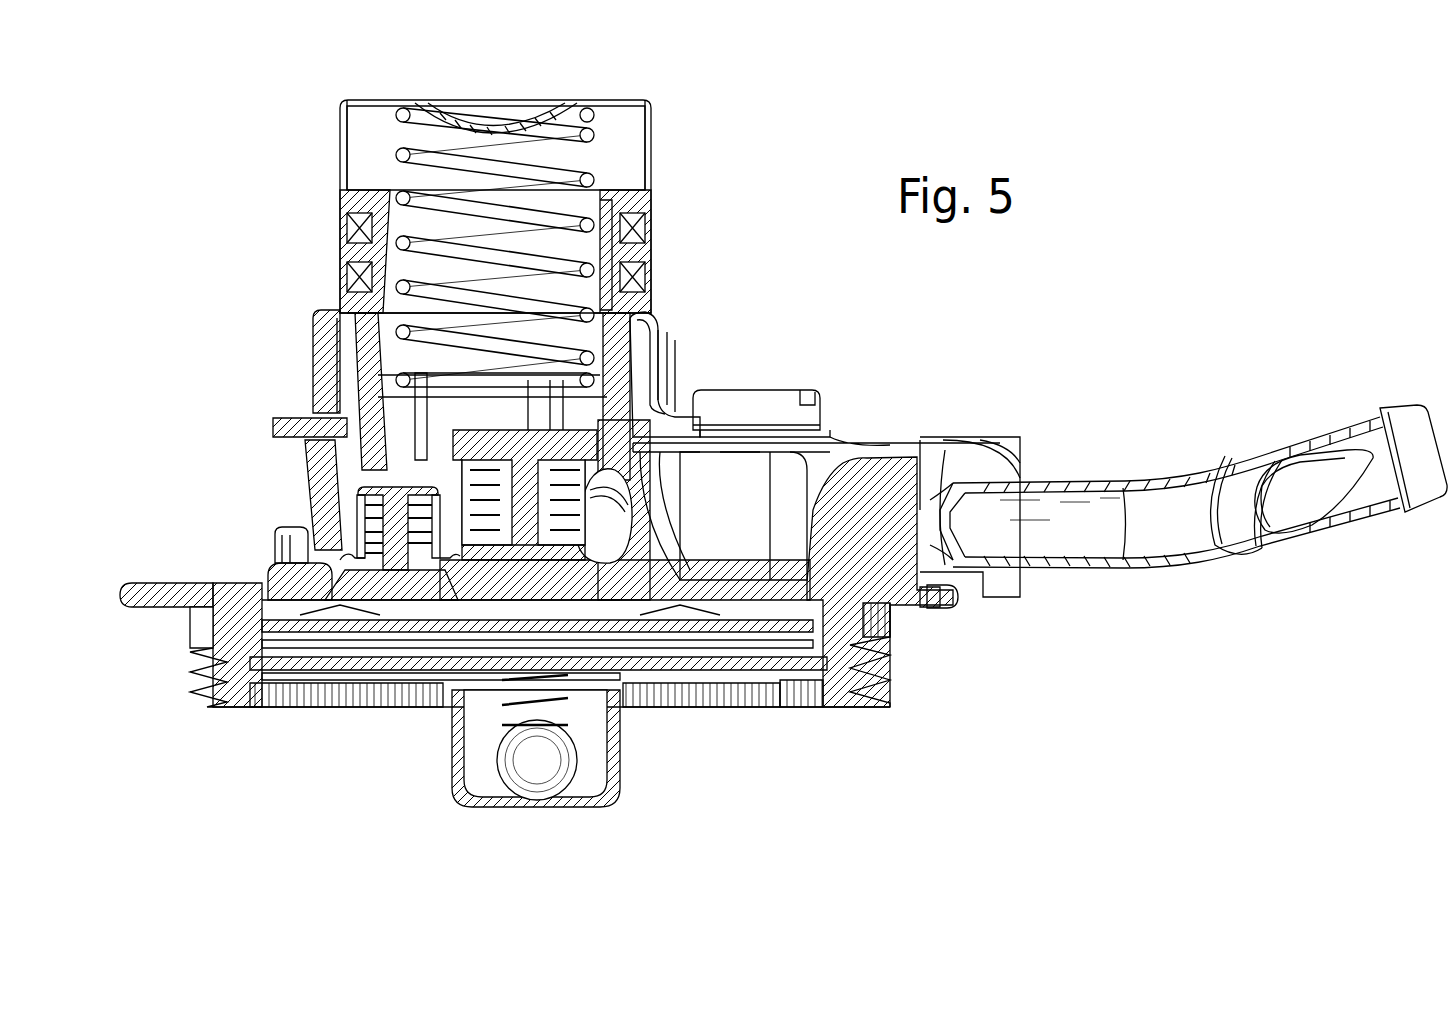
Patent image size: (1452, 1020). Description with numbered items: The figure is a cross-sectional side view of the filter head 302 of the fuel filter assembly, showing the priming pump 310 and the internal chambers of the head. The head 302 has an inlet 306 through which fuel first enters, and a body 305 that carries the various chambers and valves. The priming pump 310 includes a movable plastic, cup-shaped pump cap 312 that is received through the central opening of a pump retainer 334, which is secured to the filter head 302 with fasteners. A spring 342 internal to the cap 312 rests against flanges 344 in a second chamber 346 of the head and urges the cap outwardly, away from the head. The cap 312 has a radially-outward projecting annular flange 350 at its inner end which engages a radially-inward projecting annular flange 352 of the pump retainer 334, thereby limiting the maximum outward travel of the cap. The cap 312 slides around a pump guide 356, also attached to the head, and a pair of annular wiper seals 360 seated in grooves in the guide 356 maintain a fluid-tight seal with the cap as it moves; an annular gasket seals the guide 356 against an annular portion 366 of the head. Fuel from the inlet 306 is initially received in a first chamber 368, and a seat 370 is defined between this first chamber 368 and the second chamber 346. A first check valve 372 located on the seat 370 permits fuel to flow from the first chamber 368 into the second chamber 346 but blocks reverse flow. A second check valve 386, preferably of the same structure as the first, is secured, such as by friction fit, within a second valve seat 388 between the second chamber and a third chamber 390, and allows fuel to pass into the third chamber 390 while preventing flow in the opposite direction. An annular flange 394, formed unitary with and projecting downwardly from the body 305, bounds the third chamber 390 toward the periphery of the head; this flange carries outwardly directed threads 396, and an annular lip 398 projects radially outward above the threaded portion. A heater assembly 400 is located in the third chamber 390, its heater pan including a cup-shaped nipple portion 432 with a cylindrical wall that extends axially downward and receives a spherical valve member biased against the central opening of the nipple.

The filter head 302 is at (865, 437).
The body 305 is at (895, 477).
The inlet 306 is at (1203, 567).
The priming pump 310 is at (275, 213).
The pump cap 312 is at (340, 152).
The pump retainer 334 is at (700, 367).
The spring 342 is at (568, 130).
The flanges 344 is at (537, 417).
The second chamber 346 is at (400, 350).
The annular flange 350 is at (668, 323).
The annular flange 352 is at (648, 322).
The pump guide 356 is at (637, 180).
The annular wiper seals 360 is at (645, 275).
The annular portion 366 is at (370, 378).
The first chamber 368 is at (620, 543).
The seat 370 is at (600, 478).
The first check valve 372 is at (540, 562).
The second check valve 386 is at (355, 510).
The second valve seat 388 is at (322, 567).
The third chamber 390 is at (417, 608).
The annular flange 394 is at (843, 700).
The threads 396 is at (882, 664).
The annular lip 398 is at (923, 607).
The heater assembly 400 is at (597, 757).
The nipple portion 432 is at (472, 737).